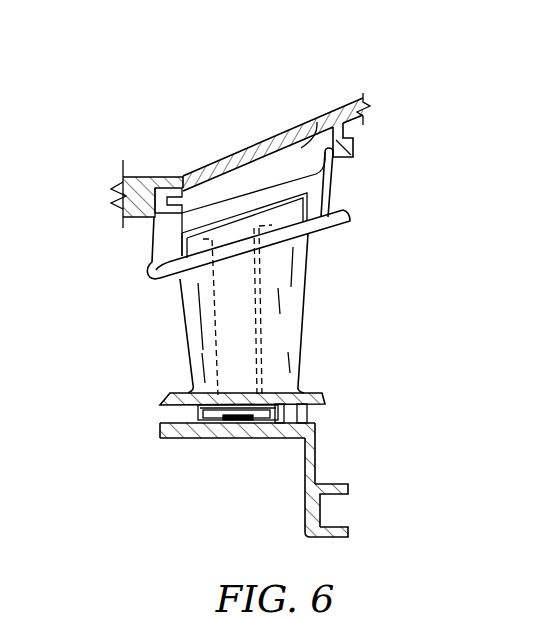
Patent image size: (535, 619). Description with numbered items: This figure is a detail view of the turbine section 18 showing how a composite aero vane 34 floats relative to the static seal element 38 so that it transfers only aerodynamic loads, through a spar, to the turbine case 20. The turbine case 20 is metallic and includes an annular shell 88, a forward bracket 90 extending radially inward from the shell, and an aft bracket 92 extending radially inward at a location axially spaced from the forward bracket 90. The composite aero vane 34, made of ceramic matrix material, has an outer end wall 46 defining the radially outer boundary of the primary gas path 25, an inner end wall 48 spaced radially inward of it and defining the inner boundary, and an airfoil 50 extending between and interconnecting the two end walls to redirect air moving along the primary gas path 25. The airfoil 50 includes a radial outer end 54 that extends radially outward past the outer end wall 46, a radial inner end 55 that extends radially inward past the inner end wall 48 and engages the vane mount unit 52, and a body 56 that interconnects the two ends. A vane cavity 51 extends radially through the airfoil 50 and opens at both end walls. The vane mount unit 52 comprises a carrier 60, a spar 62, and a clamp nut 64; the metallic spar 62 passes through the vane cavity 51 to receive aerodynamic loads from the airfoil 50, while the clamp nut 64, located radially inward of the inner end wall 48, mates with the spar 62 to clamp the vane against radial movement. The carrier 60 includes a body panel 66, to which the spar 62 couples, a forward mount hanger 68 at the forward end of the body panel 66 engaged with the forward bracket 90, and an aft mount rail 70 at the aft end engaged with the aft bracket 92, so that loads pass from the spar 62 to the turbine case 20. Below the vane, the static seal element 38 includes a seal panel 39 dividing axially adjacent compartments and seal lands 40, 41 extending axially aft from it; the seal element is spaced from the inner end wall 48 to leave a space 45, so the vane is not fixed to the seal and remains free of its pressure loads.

The turbine section 18 is at (96, 109).
The turbine case 20 is at (251, 129).
The primary gas path 25 is at (171, 352).
The composite aero vane 34 is at (114, 337).
The static seal element 38 is at (246, 468).
The seal panel 39 is at (288, 453).
The seal land 40 is at (349, 489).
The seal land 41 is at (349, 533).
The space 45 is at (290, 402).
The outer end wall 46 is at (353, 218).
The inner end wall 48 is at (327, 394).
The airfoil 50 is at (349, 318).
The vane cavity 51 is at (207, 280).
The vane mount unit 52 is at (338, 184).
The radial outer end 54 is at (176, 249).
The radial inner end 55 is at (181, 418).
The body 56 is at (311, 290).
The carrier 60 is at (316, 32).
The spar 62 is at (205, 345).
The clamp nut 64 is at (236, 426).
The body panel 66 is at (234, 191).
The forward mount hanger 68 is at (177, 187).
The aft mount rail 70 is at (313, 120).
The annular shell 88 is at (272, 141).
The forward bracket 90 is at (111, 188).
The aft bracket 92 is at (354, 132).